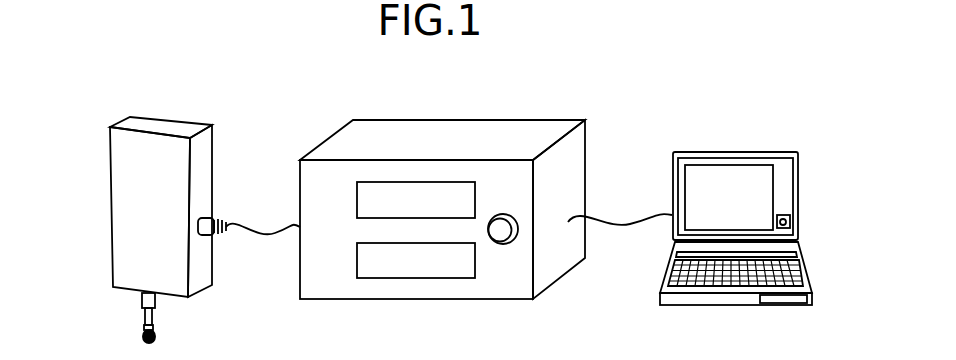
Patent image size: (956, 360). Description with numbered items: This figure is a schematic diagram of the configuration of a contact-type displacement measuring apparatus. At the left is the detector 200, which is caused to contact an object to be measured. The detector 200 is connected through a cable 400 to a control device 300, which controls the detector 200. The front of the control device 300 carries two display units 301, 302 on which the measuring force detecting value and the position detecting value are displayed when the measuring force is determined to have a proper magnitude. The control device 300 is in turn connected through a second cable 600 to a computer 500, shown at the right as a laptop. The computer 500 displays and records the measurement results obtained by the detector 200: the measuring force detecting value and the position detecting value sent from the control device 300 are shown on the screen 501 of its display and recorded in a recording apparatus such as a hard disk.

The detector 200 is at (180, 125).
The cable 400 is at (255, 223).
The control device 300 is at (543, 120).
The display unit 301 is at (388, 182).
The display unit 302 is at (392, 278).
The cable 600 is at (622, 217).
The computer 500 is at (707, 152).
The screen 501 is at (763, 165).